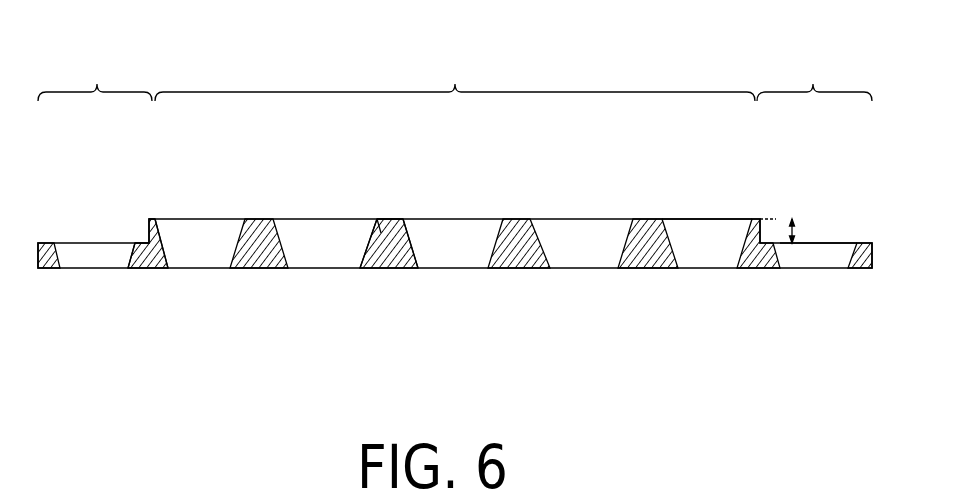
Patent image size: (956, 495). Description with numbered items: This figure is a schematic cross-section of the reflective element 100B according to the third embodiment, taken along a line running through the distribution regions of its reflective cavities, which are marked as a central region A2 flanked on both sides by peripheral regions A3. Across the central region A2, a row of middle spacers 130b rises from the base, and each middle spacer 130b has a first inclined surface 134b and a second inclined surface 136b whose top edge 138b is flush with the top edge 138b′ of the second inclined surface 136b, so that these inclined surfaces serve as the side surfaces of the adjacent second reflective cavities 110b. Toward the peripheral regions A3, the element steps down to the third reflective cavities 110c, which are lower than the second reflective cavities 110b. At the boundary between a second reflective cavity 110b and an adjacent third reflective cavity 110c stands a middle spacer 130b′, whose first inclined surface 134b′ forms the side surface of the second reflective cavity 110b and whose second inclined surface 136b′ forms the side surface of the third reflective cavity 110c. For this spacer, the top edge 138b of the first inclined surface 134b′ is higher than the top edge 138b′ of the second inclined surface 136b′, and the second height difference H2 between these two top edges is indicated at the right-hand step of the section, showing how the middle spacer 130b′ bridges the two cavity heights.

The reflective element 100B is at (78, 38).
The peripheral region A3 is at (455, 77).
The central region A2 is at (455, 77).
The second reflective cavity 110b is at (707, 228).
The third reflective cavity 110c is at (838, 250).
The second height difference H2 is at (795, 230).
The middle spacer 130b is at (389, 258).
The first inclined surface 134b is at (415, 248).
The second inclined surface 136b is at (366, 248).
The top edge 138b is at (149, 219).
The middle spacer 130b′ is at (148, 258).
The first inclined surface 134b′ is at (165, 255).
The second inclined surface 136b′ is at (130, 256).
The top edge 138b′ is at (135, 245).